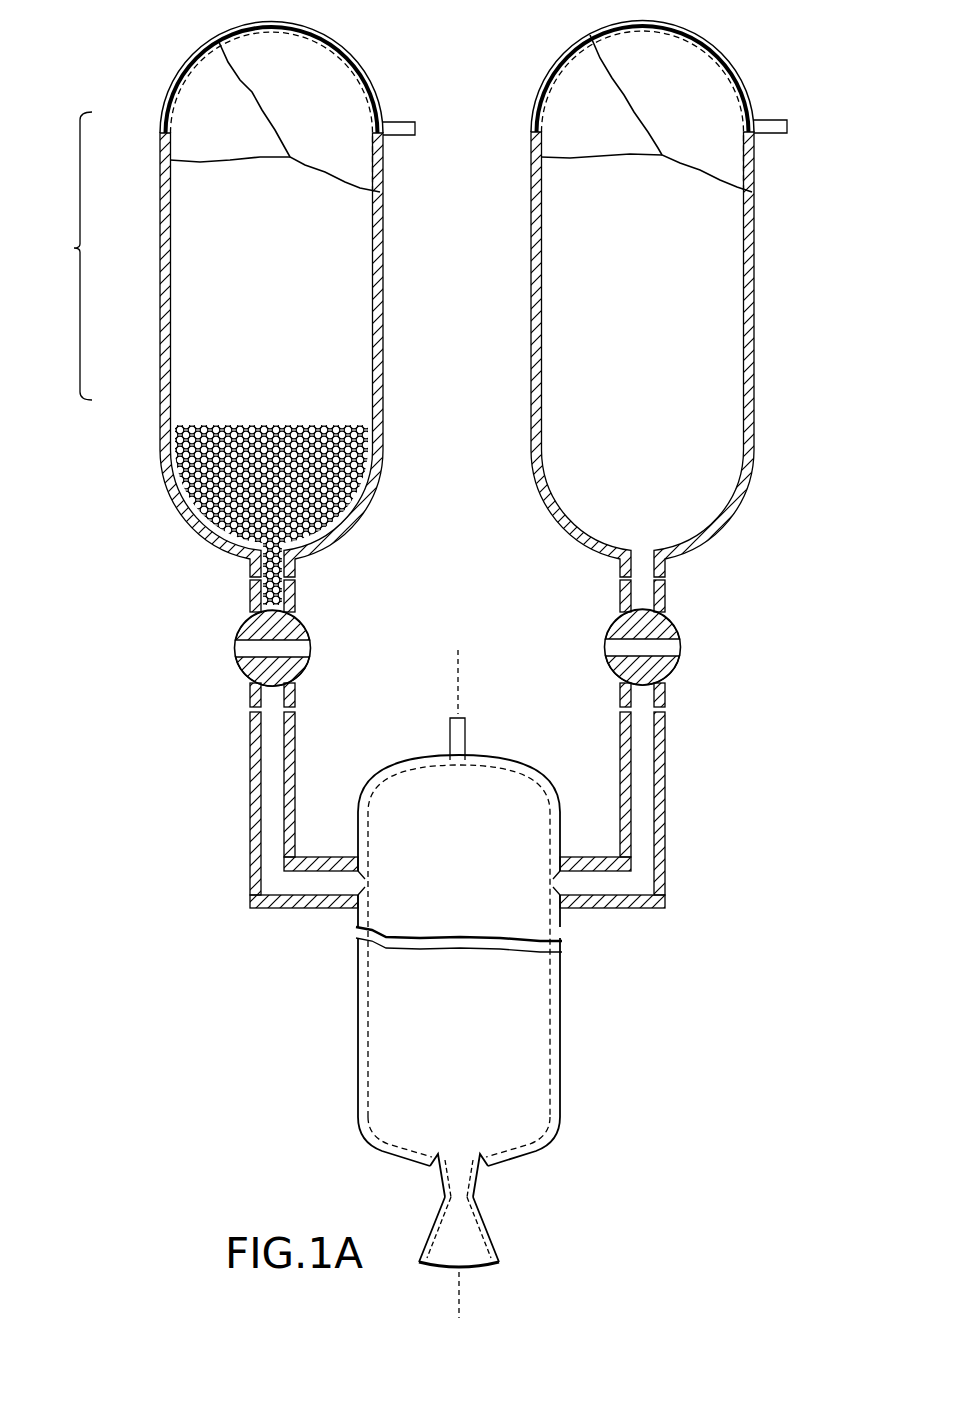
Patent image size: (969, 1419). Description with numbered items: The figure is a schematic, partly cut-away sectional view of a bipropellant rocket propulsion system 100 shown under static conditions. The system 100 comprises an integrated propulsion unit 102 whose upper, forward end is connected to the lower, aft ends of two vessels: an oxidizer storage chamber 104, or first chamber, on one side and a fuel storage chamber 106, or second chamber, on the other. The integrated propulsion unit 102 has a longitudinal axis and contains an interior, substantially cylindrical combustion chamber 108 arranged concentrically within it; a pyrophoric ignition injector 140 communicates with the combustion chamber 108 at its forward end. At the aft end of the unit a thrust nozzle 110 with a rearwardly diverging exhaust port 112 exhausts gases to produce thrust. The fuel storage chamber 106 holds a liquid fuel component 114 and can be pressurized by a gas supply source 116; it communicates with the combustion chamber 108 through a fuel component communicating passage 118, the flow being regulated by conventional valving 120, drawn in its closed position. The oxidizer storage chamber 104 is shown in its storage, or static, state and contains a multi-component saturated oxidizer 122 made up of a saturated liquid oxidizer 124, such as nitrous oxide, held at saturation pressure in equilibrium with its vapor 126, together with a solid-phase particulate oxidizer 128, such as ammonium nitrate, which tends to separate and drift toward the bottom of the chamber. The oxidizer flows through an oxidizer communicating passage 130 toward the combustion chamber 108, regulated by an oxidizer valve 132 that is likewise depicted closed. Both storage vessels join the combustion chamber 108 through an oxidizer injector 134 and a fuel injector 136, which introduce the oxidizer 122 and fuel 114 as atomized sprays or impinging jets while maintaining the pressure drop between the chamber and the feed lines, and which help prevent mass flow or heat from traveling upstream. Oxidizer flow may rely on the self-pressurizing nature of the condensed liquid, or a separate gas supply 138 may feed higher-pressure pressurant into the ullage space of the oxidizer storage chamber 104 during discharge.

The bipropellant rocket propulsion system 100 is at (748, 16).
The integrated propulsion unit 102 is at (612, 977).
The oxidizer storage chamber 104 is at (197, 62).
The fuel storage chamber 106 is at (567, 62).
The combustion chamber 108 is at (557, 1050).
The thrust nozzle 110 is at (482, 1187).
The rearwardly diverging exhaust port 112 is at (490, 1246).
The liquid fuel component 114 is at (731, 263).
The gas supply source 116 is at (765, 120).
The fuel component communicating passage 118 is at (647, 768).
The valving 120 is at (676, 620).
The multi-component saturated oxidizer 122 is at (59, 256).
The saturated liquid oxidizer 124 is at (178, 275).
The vapor 126 is at (178, 147).
The solid-phase particulate oxidizer 128 is at (185, 421).
The oxidizer communicating passage 130 is at (268, 790).
The oxidizer valve 132 is at (243, 632).
The oxidizer injector 134 is at (347, 877).
The fuel injector 136 is at (575, 873).
The separate gas supply 138 is at (388, 122).
The pyrophoric ignition injector 140 is at (467, 730).